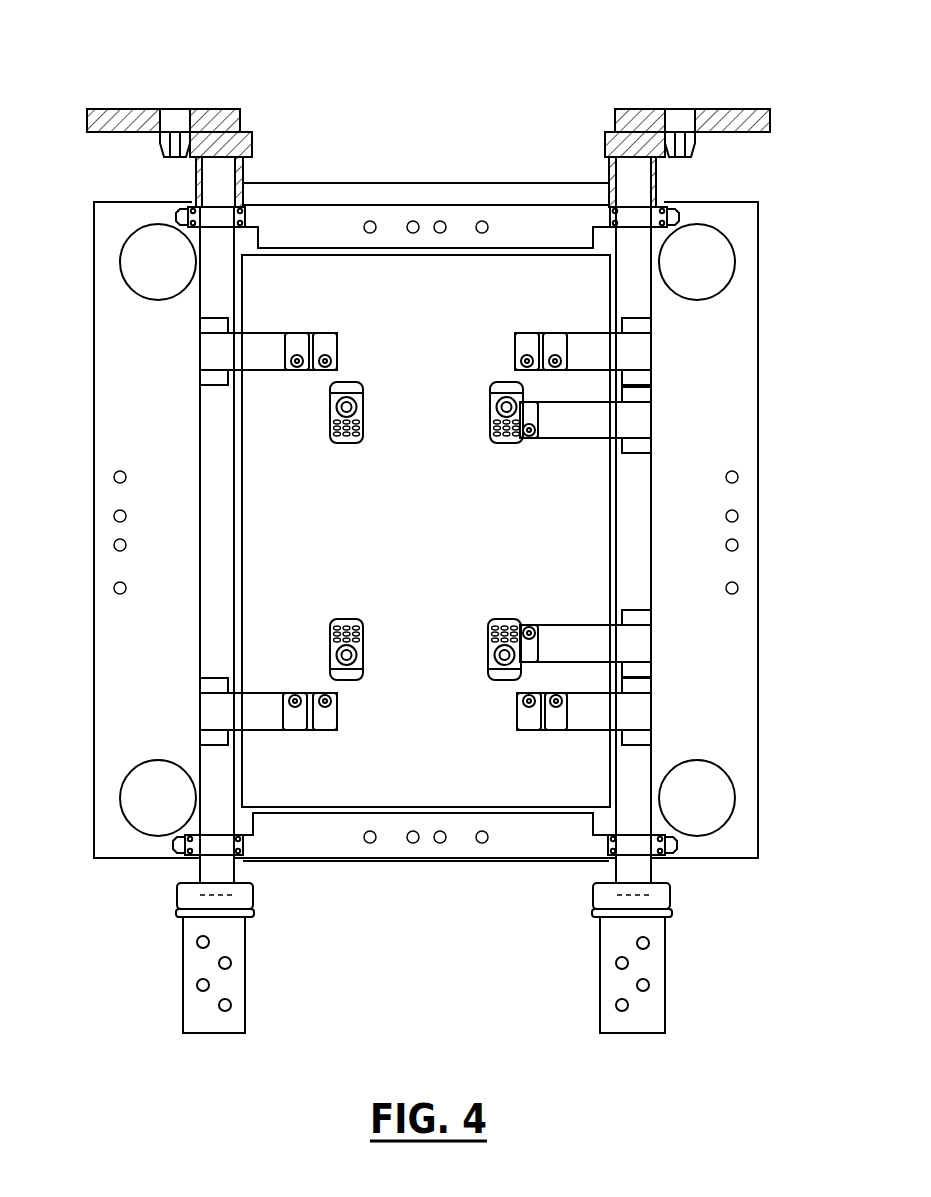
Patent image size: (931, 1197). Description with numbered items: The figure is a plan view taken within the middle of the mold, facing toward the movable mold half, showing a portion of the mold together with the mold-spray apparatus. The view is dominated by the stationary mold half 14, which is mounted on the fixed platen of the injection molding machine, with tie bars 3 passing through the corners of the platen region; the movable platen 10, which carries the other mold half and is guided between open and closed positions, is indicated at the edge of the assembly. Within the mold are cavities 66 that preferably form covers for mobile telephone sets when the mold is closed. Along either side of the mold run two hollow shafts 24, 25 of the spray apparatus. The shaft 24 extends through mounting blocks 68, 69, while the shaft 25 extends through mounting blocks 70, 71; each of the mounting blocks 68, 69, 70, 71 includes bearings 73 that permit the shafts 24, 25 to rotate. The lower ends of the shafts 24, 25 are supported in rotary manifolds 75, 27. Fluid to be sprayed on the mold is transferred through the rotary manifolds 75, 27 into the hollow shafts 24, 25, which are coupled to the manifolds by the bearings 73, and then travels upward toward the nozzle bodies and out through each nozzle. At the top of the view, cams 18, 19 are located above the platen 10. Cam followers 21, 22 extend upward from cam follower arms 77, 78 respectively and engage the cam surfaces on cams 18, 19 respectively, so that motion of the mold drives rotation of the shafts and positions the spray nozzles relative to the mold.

The tie bars 3 is at (130, 258).
The movable platen 10 is at (740, 420).
The stationary mold half 14 is at (492, 521).
The cam 18 is at (213, 115).
The cam 19 is at (720, 115).
The cam follower 21 is at (172, 115).
The cam follower 22 is at (676, 115).
The shaft 24 is at (205, 300).
The shaft 25 is at (645, 300).
The rotary manifold 27 is at (656, 955).
The cavities 66 is at (488, 420).
The mounting block 68 is at (176, 212).
The mounting block 69 is at (172, 856).
The mounting block 70 is at (682, 212).
The mounting block 71 is at (672, 855).
The bearings 73 is at (185, 218).
The rotary manifold 75 is at (233, 971).
The cam follower arm 77 is at (262, 136).
The cam follower arm 78 is at (598, 136).